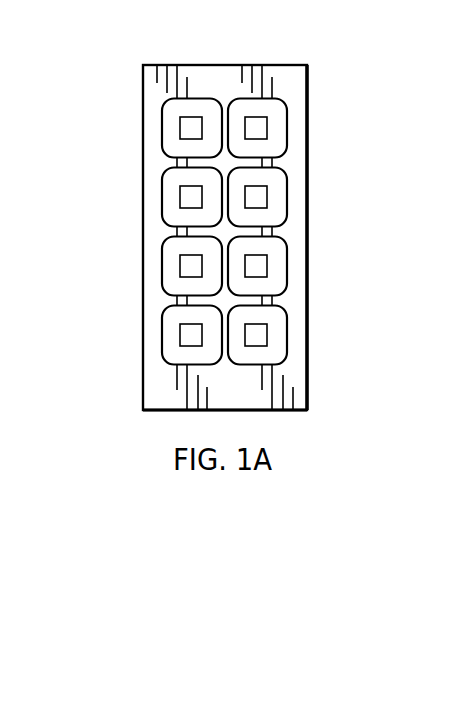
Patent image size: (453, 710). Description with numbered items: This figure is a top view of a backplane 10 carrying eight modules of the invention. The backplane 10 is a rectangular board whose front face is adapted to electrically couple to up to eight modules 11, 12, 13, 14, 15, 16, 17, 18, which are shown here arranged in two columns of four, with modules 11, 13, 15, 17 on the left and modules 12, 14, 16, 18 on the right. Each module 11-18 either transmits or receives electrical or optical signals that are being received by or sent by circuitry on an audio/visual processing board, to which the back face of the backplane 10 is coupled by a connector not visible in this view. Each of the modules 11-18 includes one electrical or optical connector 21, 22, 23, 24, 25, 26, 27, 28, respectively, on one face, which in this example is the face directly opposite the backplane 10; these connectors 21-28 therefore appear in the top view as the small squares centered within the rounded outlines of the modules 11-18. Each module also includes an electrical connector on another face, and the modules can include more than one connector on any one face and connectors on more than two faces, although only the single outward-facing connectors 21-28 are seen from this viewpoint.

The backplane 10 is at (158, 387).
The module 11 is at (162, 126).
The module 12 is at (287, 126).
The module 13 is at (162, 195).
The module 14 is at (287, 195).
The module 15 is at (162, 264).
The module 16 is at (287, 264).
The module 17 is at (162, 333).
The module 18 is at (287, 333).
The electrical or optical connector 21 is at (189, 130).
The electrical or optical connector 22 is at (257, 130).
The electrical or optical connector 23 is at (189, 199).
The electrical or optical connector 24 is at (257, 199).
The electrical or optical connector 25 is at (189, 268).
The electrical or optical connector 26 is at (257, 268).
The electrical or optical connector 27 is at (189, 337).
The electrical or optical connector 28 is at (257, 337).